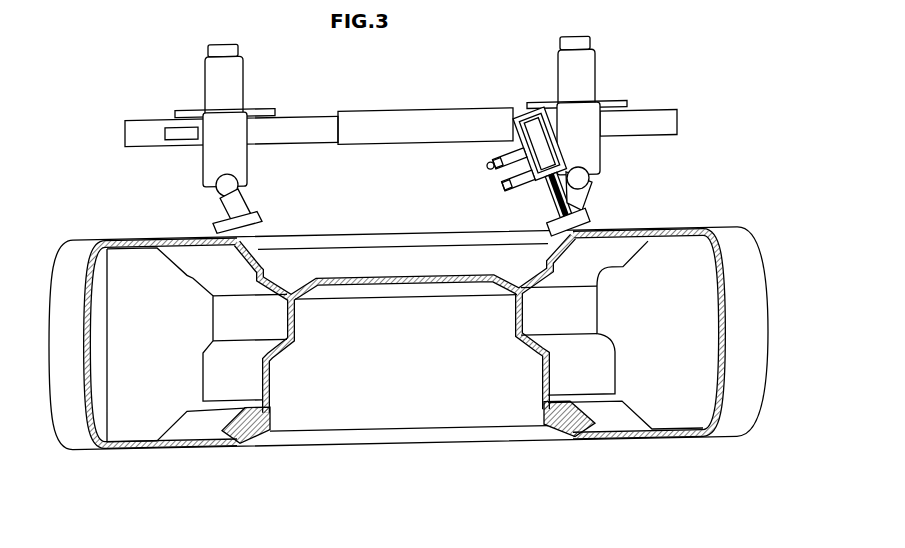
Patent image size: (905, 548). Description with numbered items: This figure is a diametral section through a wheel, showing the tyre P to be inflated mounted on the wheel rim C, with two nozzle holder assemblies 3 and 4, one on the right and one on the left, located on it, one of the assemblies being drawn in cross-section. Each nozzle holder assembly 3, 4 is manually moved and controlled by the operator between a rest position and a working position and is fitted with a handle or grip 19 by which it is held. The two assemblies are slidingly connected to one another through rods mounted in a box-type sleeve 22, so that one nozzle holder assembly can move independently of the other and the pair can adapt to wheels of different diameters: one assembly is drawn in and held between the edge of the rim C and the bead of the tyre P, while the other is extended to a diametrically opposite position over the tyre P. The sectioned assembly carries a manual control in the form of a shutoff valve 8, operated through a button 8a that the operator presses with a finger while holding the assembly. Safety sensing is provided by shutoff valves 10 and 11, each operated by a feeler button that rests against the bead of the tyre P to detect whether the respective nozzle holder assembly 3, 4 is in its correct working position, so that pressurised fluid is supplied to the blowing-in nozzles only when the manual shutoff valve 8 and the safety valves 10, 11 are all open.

The handle or grip 19 is at (208, 79).
The box-type sleeve 22 is at (375, 117).
The button 8a is at (520, 117).
The shutoff valve 8 is at (575, 131).
The nozzle holder assembly 3 is at (592, 186).
The nozzle holder assembly 4 is at (213, 186).
The shutoff valve 10 is at (548, 233).
The shutoff valve 11 is at (265, 210).
The wheel rim C is at (543, 396).
The tyre P is at (733, 434).